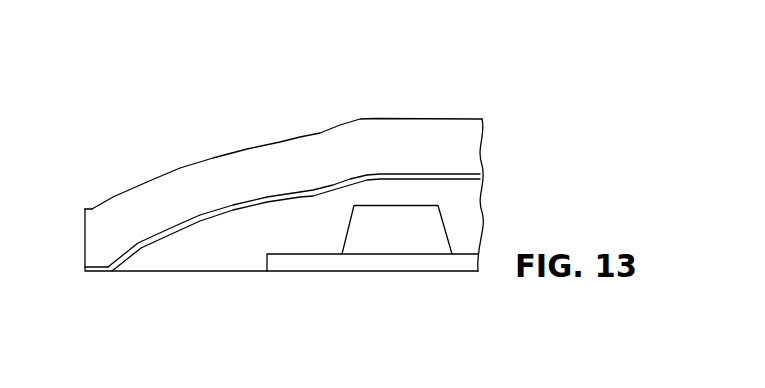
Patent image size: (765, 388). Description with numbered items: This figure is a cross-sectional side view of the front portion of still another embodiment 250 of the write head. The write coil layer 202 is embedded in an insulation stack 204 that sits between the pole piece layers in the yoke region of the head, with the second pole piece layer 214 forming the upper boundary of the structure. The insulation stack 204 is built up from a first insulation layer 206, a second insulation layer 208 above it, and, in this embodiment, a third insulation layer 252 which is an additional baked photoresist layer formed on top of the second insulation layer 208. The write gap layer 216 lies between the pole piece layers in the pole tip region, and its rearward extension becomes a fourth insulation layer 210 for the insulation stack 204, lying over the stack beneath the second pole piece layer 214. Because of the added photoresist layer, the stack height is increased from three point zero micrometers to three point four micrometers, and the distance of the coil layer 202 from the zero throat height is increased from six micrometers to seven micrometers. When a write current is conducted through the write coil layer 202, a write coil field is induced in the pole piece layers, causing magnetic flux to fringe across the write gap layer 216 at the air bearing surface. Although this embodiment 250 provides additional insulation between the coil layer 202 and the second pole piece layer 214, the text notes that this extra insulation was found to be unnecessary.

The write coil layer 202 is at (407, 242).
The insulation stack 204 is at (433, 170).
The first insulation layer 206 is at (315, 265).
The second insulation layer 208 is at (183, 260).
The fourth insulation layer 210 is at (235, 205).
The second pole piece layer 214 is at (298, 152).
The write gap layer 216 is at (93, 273).
The embodiment 250 is at (527, 147).
The third insulation layer 252 is at (386, 193).